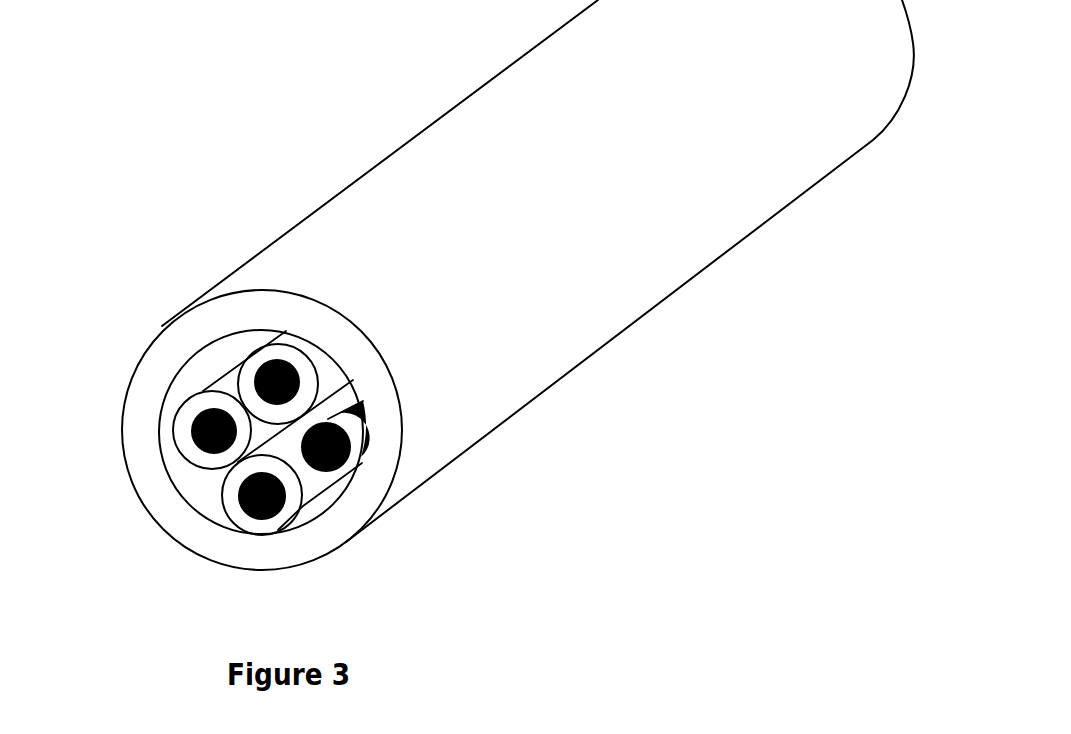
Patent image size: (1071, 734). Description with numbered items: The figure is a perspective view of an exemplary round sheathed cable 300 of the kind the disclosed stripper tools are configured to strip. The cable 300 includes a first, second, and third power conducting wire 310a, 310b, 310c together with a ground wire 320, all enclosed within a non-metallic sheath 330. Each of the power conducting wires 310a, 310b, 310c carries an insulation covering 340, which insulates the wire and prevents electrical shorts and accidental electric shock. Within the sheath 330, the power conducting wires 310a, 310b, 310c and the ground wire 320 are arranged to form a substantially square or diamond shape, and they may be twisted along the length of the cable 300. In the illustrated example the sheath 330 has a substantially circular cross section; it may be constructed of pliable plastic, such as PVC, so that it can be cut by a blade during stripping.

The round sheathed cable 300 is at (220, 172).
The first power conducting wire 310a is at (267, 380).
The second power conducting wire 310b is at (199, 434).
The third power conducting wire 310c is at (255, 500).
The ground wire 320 is at (335, 455).
The non-metallic sheath 330 is at (443, 147).
The insulation covering 340 is at (285, 523).